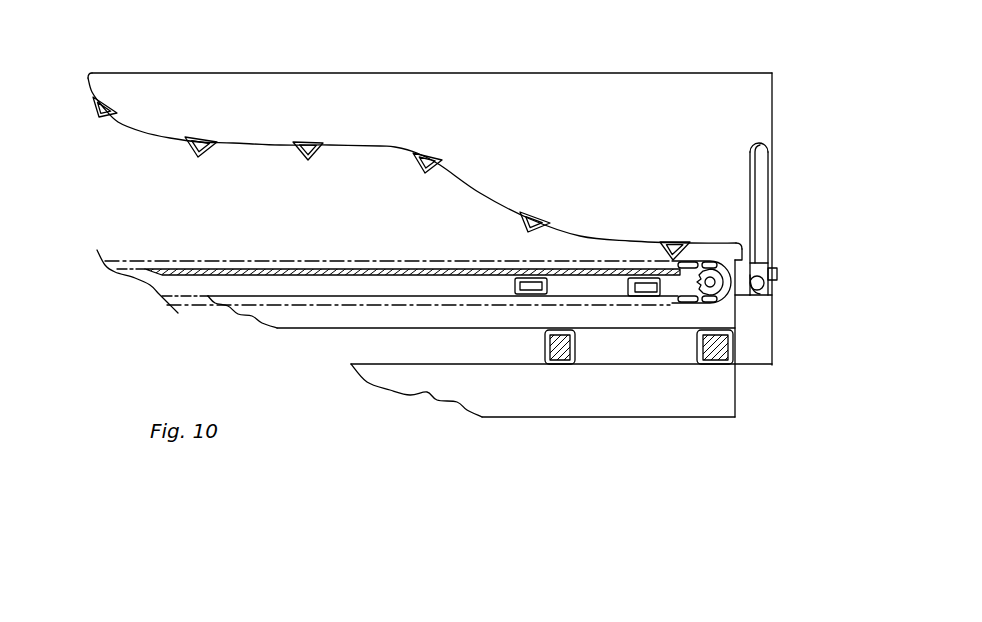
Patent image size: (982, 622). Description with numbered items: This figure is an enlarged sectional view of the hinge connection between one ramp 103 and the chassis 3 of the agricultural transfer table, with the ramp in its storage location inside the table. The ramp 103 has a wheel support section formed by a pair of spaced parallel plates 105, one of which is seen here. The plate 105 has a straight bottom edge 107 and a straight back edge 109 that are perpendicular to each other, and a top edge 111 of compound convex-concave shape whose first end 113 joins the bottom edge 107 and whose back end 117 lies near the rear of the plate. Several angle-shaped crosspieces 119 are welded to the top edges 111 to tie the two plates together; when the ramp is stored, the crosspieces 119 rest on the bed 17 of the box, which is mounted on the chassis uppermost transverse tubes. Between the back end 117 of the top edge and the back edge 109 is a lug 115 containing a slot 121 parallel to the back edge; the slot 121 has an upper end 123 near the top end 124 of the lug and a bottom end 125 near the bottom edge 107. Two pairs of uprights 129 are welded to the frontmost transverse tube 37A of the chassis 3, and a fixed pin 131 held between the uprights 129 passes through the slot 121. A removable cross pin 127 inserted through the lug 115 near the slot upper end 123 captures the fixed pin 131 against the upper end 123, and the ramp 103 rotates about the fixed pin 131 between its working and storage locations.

The chassis 3 is at (394, 396).
The bed 17 is at (192, 268).
The frontmost transverse tube 37A is at (697, 350).
The ramp 103 is at (152, 129).
The plate 105 is at (541, 142).
The bottom edge 107 is at (583, 72).
The back edge 109 is at (773, 98).
The top edge 111 is at (258, 144).
The first end 113 is at (87, 76).
The lug 115 is at (768, 288).
The back end 117 is at (734, 251).
The crosspiece 119 is at (413, 156).
The slot 121 is at (766, 196).
The upper end 123 is at (759, 291).
The top end 124 is at (748, 298).
The bottom end 125 is at (768, 156).
The cross pin 127 is at (777, 268).
The upright 129 is at (748, 357).
The fixed pin 131 is at (765, 283).